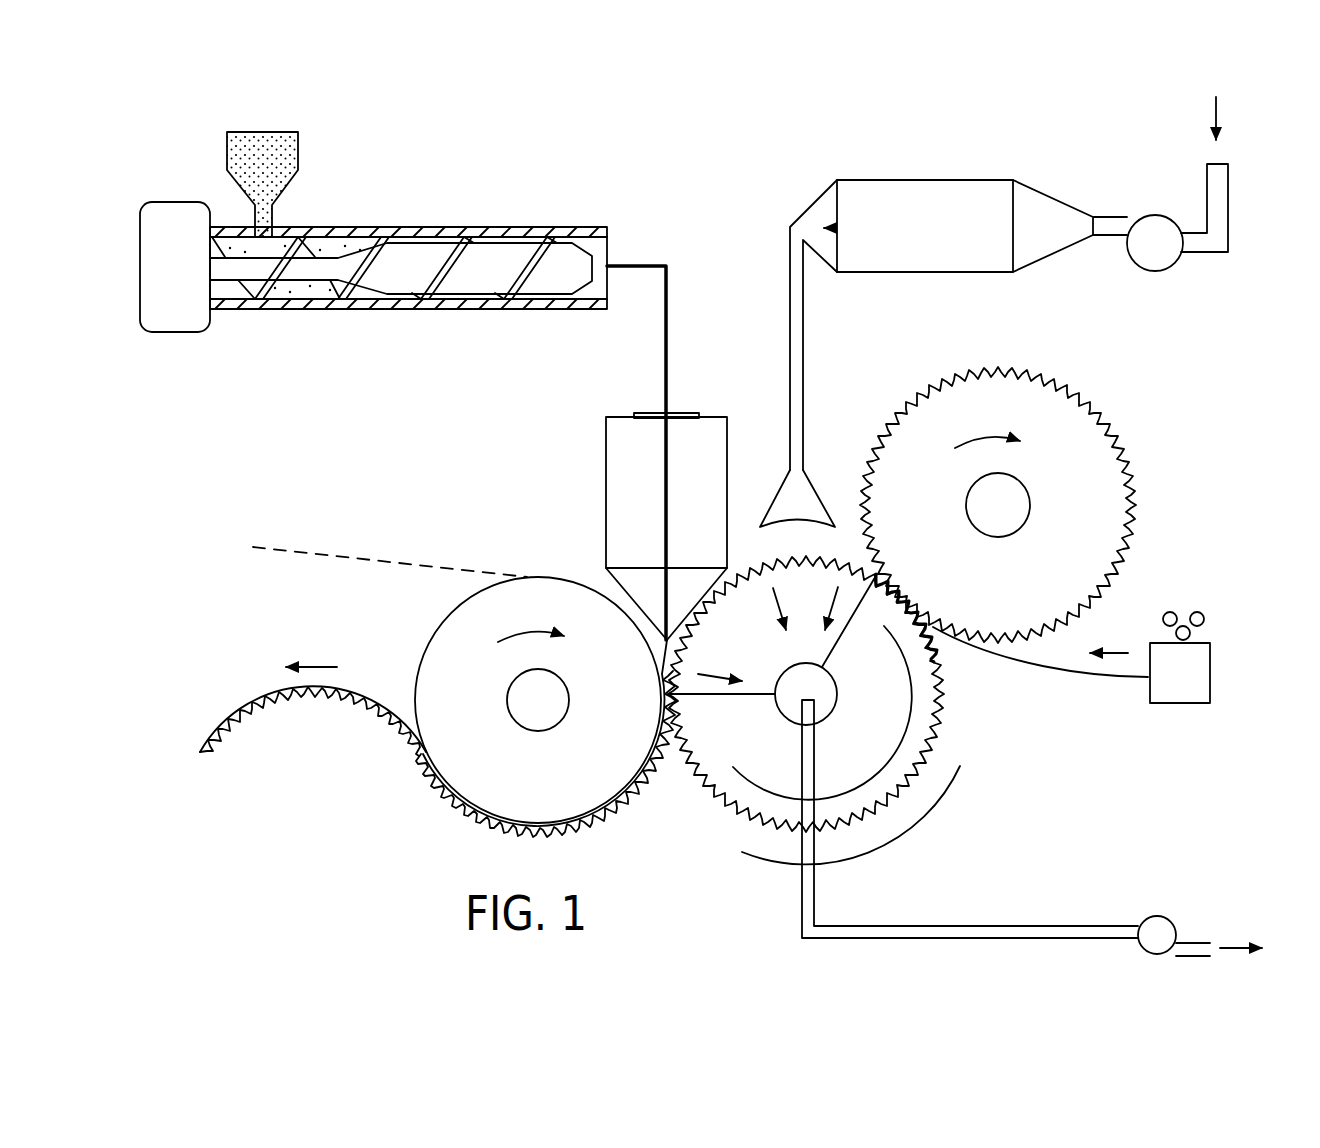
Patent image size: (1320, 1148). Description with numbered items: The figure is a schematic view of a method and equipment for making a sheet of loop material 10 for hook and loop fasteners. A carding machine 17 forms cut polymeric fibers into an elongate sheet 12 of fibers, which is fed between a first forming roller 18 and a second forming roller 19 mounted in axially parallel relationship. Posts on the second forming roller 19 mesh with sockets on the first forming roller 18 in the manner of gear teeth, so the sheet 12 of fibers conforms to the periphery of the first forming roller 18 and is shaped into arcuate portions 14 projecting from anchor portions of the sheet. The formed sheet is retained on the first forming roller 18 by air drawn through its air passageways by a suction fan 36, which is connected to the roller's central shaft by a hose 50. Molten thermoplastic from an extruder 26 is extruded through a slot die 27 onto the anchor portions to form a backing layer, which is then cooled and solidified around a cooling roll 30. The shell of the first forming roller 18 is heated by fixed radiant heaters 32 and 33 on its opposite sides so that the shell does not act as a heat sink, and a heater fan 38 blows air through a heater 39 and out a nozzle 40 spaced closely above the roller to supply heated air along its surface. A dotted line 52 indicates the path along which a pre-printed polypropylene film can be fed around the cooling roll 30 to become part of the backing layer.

The sheet of loop material 10 is at (233, 723).
The sheet of fibers 12 is at (1067, 673).
The arcuate portions 14 is at (607, 818).
The carding machine 17 is at (1192, 703).
The first forming roller 18 is at (927, 723).
The second forming roller 19 is at (1097, 468).
The extruder 26 is at (330, 228).
The slot die 27 is at (713, 415).
The cooling roll 30 is at (457, 630).
The radiant heater 32 is at (782, 863).
The radiant heater 33 is at (765, 788).
The suction fan 36 is at (1173, 923).
The heater fan 38 is at (1147, 270).
The heater 39 is at (955, 272).
The nozzle 40 is at (817, 489).
The hose 50 is at (1027, 938).
The dotted line 52 is at (337, 548).